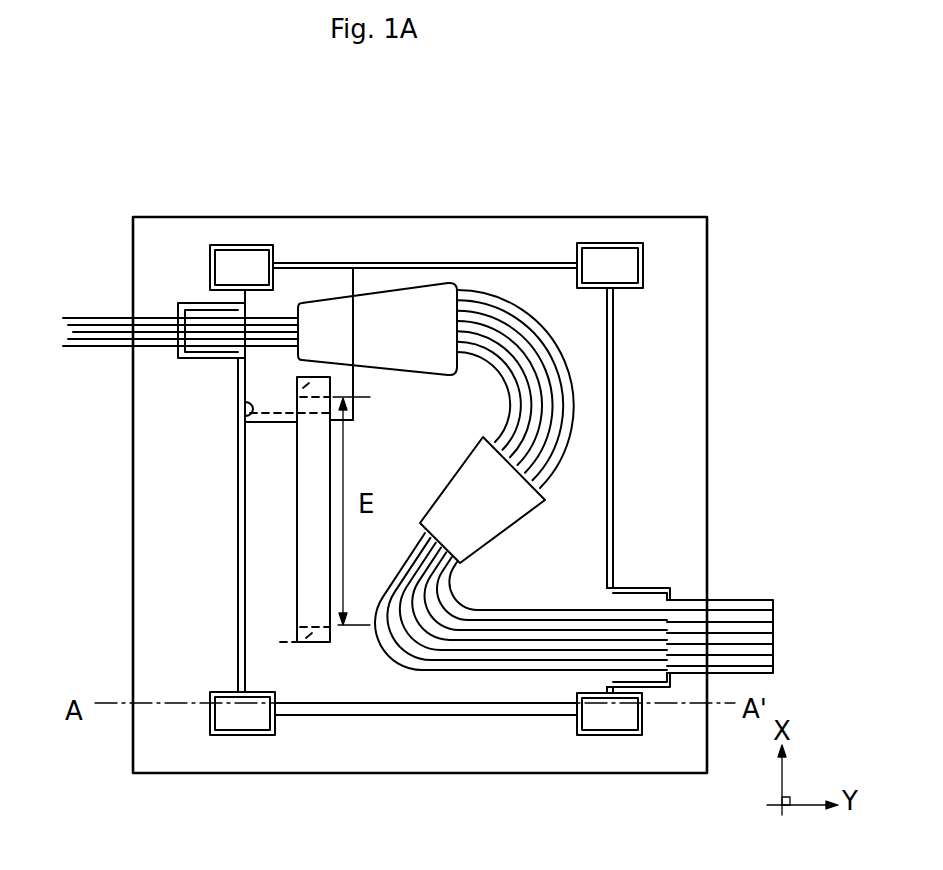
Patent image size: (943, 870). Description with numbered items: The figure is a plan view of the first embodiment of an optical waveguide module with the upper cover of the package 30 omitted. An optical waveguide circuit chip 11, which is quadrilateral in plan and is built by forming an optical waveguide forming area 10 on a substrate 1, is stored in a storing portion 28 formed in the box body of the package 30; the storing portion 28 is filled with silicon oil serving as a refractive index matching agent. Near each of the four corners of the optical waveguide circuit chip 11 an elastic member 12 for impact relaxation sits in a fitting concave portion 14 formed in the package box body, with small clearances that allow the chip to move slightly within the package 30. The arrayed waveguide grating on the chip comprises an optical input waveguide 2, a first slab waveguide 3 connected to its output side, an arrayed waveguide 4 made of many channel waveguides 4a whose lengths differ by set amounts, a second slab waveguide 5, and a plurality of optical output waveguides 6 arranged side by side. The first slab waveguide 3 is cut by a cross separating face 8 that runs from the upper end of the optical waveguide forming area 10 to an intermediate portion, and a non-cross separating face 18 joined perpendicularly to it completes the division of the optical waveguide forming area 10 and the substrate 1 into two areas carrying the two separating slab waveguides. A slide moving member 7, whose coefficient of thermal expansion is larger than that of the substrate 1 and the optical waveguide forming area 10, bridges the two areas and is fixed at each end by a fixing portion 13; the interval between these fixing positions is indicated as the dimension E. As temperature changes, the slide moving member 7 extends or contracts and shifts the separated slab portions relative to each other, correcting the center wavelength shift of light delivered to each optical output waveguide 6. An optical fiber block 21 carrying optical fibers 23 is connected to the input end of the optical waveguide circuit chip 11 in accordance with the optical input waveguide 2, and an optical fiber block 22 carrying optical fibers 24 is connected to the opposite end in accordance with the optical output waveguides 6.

The substrate 1 is at (257, 605).
The optical input waveguide 2 is at (290, 262).
The first slab waveguide 3 is at (330, 323).
The arrayed waveguide 4 is at (577, 338).
The channel waveguide 4a is at (573, 395).
The second slab waveguide 5 is at (493, 520).
The optical output waveguide 6 is at (570, 610).
The slide moving member 7 is at (307, 555).
The cross separating face 8 is at (364, 282).
The optical waveguide forming area 10 is at (418, 464).
The optical waveguide circuit chip 11 is at (597, 430).
The elastic member 12 is at (242, 257).
The fixing portion 13 is at (298, 370).
The fitting concave portion 14 is at (227, 243).
The non-cross separating face 18 is at (245, 408).
The optical fiber block 21 is at (197, 310).
The optical fiber block 22 is at (655, 590).
The optical fiber 23 is at (100, 323).
The optical fiber 24 is at (743, 600).
The storing portion 28 is at (614, 455).
The package 30 is at (663, 755).